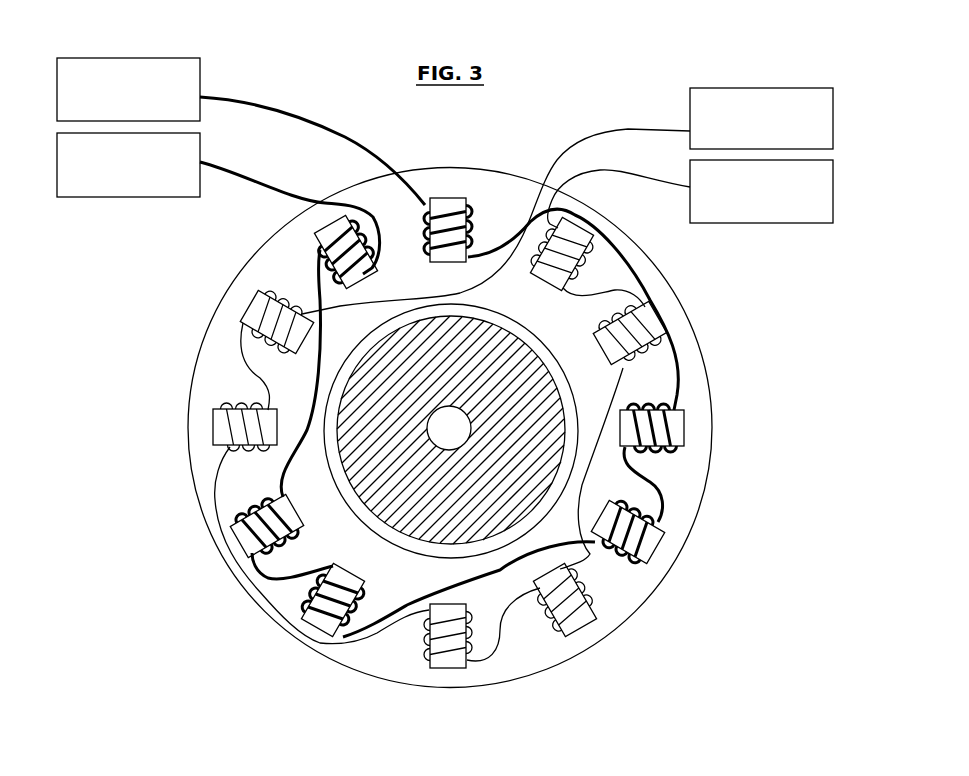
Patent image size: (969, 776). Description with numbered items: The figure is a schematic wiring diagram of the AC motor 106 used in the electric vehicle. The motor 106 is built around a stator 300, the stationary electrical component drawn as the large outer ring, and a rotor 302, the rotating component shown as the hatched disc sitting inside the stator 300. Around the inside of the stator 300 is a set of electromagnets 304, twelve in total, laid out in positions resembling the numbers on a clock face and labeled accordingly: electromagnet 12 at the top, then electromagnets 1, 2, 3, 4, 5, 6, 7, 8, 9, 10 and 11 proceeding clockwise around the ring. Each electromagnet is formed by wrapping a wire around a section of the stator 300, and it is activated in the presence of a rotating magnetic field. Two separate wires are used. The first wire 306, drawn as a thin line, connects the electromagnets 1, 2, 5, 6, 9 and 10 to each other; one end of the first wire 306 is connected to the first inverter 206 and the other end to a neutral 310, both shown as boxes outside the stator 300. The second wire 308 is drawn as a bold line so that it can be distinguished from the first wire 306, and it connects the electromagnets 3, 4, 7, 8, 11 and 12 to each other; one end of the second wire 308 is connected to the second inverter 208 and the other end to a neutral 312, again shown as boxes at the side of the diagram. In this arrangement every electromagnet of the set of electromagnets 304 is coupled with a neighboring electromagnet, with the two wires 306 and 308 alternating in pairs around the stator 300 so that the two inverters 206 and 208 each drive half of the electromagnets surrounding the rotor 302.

The AC motor 106 is at (385, 119).
The stator 300 is at (698, 355).
The rotor 302 is at (383, 476).
The set of electromagnets 304 is at (680, 542).
The first wire 306 is at (598, 124).
The second wire 308 is at (690, 380).
The first inverter 206 is at (761, 118).
The second inverter 208 is at (128, 89).
The neutral 310 is at (761, 191).
The neutral 312 is at (128, 165).
The electromagnet 1 is at (564, 238).
The electromagnet 2 is at (642, 325).
The electromagnet 3 is at (680, 428).
The electromagnet 4 is at (645, 538).
The electromagnet 5 is at (570, 618).
The electromagnet 6 is at (448, 663).
The electromagnet 7 is at (326, 616).
The electromagnet 8 is at (248, 533).
The electromagnet 9 is at (215, 427).
The electromagnet 10 is at (256, 314).
The electromagnet 11 is at (339, 233).
The electromagnet 12 is at (448, 202).